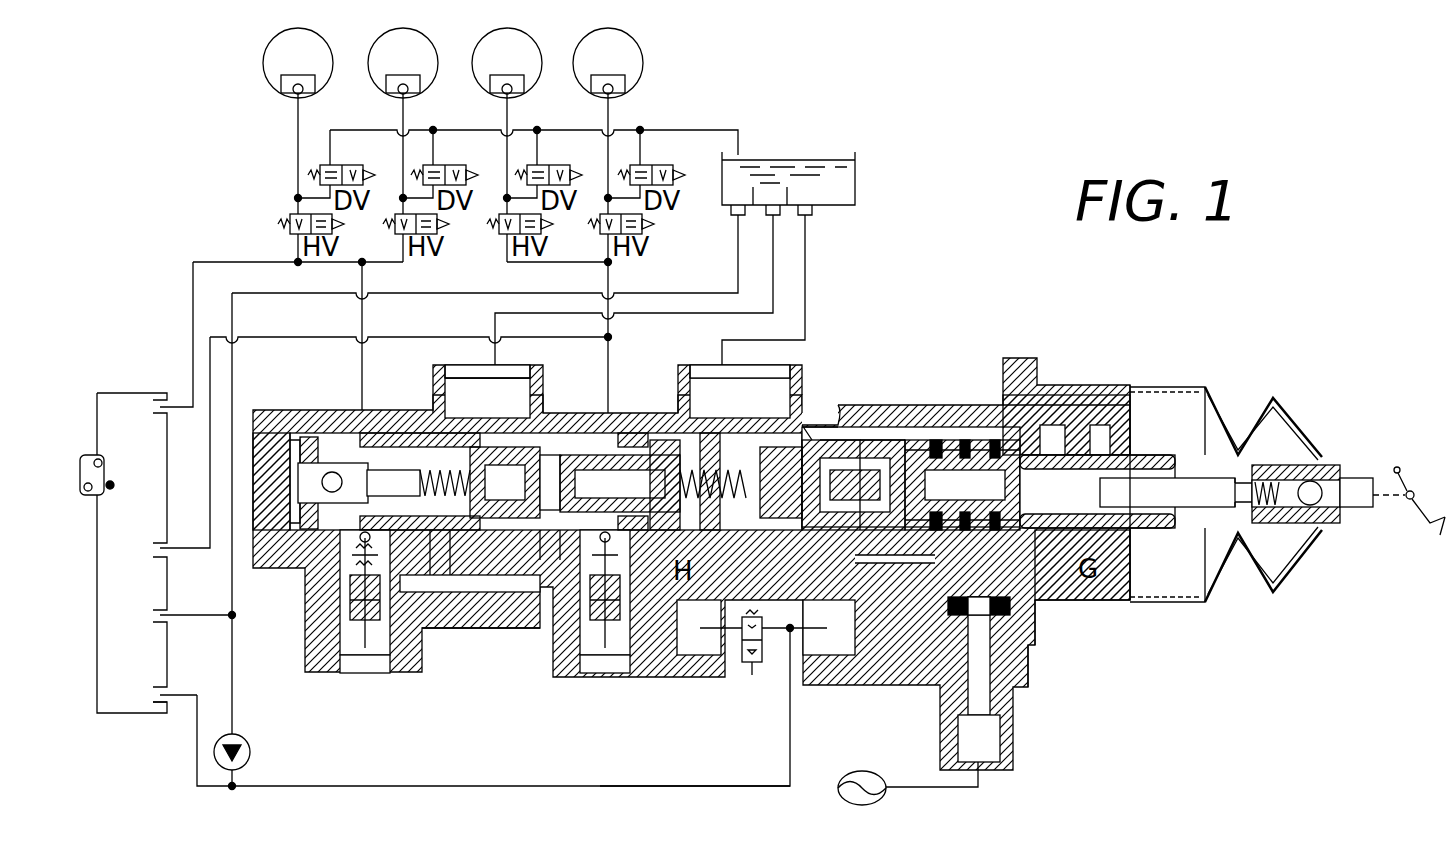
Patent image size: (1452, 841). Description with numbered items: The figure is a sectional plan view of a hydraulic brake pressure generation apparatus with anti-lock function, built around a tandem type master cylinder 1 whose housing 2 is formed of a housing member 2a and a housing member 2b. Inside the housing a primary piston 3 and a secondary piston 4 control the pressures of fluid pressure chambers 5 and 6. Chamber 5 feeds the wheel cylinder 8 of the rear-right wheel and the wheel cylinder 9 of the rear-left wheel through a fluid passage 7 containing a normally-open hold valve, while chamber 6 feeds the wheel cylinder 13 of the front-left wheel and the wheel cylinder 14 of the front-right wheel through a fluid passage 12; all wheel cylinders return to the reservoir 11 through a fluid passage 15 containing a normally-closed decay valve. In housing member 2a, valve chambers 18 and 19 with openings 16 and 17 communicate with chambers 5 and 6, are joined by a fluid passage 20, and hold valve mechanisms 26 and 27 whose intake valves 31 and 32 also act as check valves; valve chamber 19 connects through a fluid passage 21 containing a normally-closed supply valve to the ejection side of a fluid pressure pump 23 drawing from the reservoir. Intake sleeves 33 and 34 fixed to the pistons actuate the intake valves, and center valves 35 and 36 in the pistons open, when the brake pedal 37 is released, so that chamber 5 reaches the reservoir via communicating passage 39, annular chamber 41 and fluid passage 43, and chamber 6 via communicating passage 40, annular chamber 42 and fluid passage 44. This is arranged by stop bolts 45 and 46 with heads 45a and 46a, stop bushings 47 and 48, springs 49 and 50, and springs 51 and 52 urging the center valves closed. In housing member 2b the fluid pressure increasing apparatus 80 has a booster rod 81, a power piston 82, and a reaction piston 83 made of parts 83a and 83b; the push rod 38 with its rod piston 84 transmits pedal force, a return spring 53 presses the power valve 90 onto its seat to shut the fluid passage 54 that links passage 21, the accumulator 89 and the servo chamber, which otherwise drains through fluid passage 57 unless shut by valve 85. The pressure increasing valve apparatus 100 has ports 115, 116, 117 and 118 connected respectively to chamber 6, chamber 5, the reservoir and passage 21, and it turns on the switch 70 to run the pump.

The tandem type master cylinder 1 is at (1098, 645).
The housing 2 is at (812, 310).
The housing member 2a is at (810, 368).
The housing member 2b is at (845, 395).
The primary piston 3 is at (875, 410).
The secondary piston 4 is at (553, 422).
The fluid pressure chamber 5 is at (690, 432).
The fluid pressure chamber 6 is at (440, 430).
The fluid passage 7 is at (605, 350).
The wheel cylinder 8 is at (478, 88).
The wheel cylinder 9 is at (578, 88).
The reservoir 11 is at (855, 167).
The fluid passage 12 is at (362, 368).
The wheel cylinder 13 is at (285, 96).
The wheel cylinder 14 is at (385, 92).
The fluid passage 15 is at (690, 130).
The opening 16 is at (560, 545).
The opening 17 is at (342, 535).
The valve chamber 18 is at (630, 560).
The valve chamber 19 is at (430, 592).
The fluid passage 20 is at (473, 630).
The fluid passage 21 is at (600, 786).
The fluid pressure pump 23 is at (250, 748).
The valve mechanism 26 is at (566, 580).
The valve mechanism 27 is at (388, 560).
The intake valve 31 is at (660, 650).
The intake valve 32 is at (425, 640).
The intake sleeve 33 is at (665, 412).
The intake sleeve 34 is at (400, 433).
The center valve 35 is at (828, 562).
The center valve 36 is at (480, 530).
The brake pedal 37 is at (1408, 500).
The push rod 38 is at (1192, 508).
The communicating passage 39 is at (818, 445).
The communicating passage 40 is at (575, 465).
The annular chamber 41 is at (770, 405).
The annular chamber 42 is at (490, 400).
The fluid passage 43 is at (716, 353).
The fluid passage 44 is at (482, 316).
The stop bolt 45 is at (735, 528).
The head 45a is at (665, 430).
The stop bolt 46 is at (380, 440).
The head 46a is at (326, 455).
The stop bushing 47 is at (583, 433).
The stop bushing 48 is at (268, 420).
The spring 49 is at (705, 545).
The spring 50 is at (300, 520).
The spring 51 is at (770, 625).
The spring 52 is at (452, 545).
The return spring 53 is at (905, 565).
The fluid passage 54 is at (905, 620).
The fluid passage 57 is at (937, 410).
The switch 70 is at (83, 455).
The fluid pressure increasing apparatus 80 is at (1092, 608).
The booster rod 81 is at (910, 410).
The power piston 82 is at (963, 410).
The reaction piston 83 is at (1020, 322).
The reaction piston part 83a is at (1045, 425).
The reaction piston part 83b is at (1093, 400).
The rod piston 84 is at (1148, 410).
The valve 85 is at (983, 410).
The accumulator 89 is at (870, 770).
The power valve 90 is at (1028, 614).
The pressure increasing valve apparatus 100 is at (144, 380).
The port 115 is at (150, 415).
The port 116 is at (150, 560).
The port 117 is at (150, 625).
The port 118 is at (150, 703).